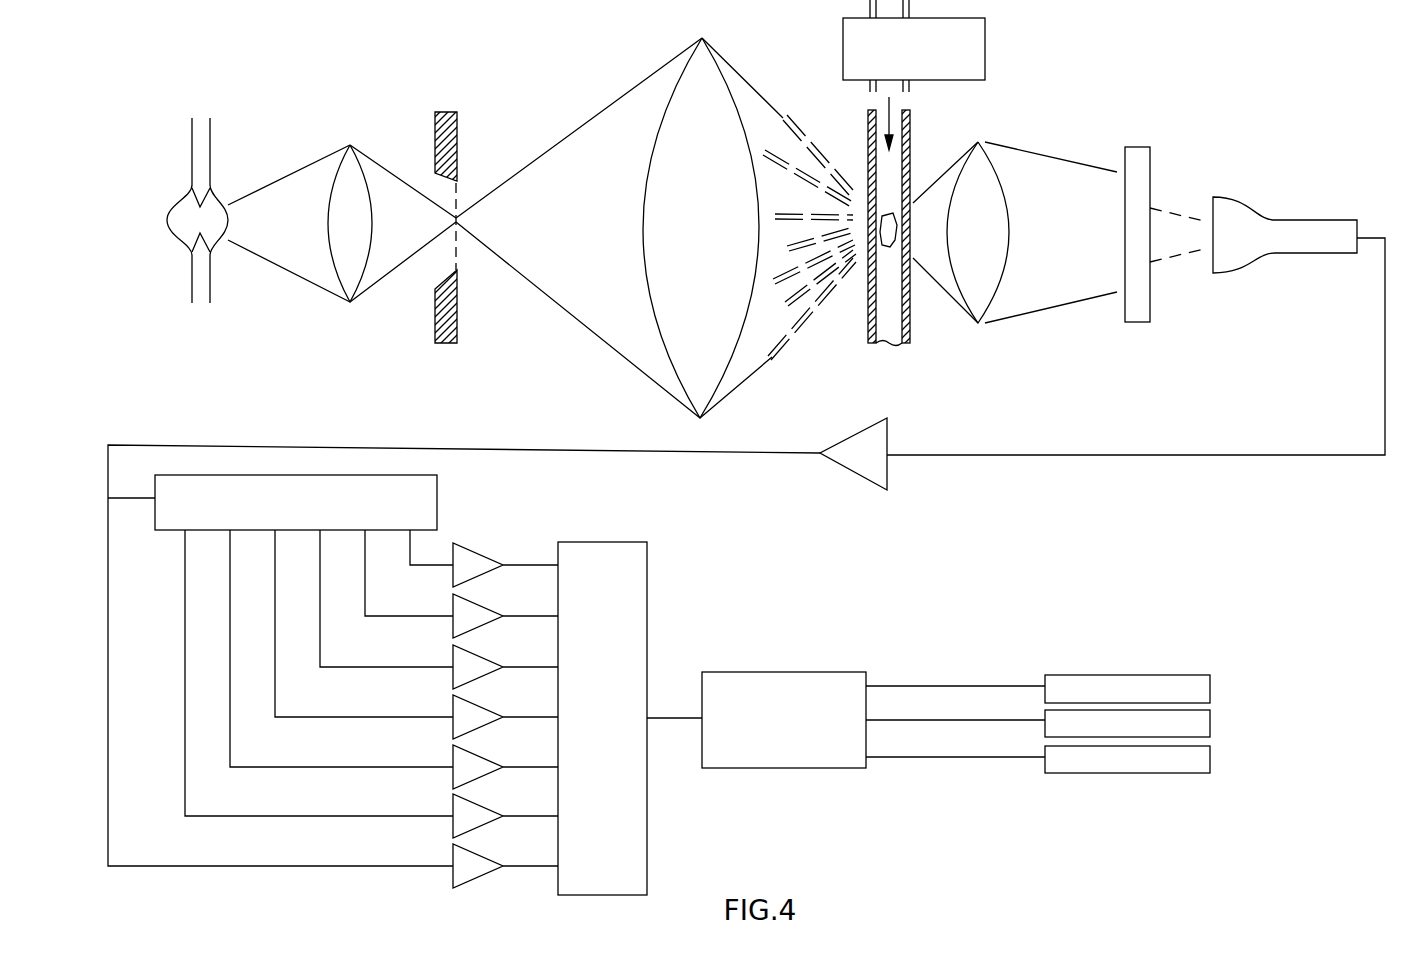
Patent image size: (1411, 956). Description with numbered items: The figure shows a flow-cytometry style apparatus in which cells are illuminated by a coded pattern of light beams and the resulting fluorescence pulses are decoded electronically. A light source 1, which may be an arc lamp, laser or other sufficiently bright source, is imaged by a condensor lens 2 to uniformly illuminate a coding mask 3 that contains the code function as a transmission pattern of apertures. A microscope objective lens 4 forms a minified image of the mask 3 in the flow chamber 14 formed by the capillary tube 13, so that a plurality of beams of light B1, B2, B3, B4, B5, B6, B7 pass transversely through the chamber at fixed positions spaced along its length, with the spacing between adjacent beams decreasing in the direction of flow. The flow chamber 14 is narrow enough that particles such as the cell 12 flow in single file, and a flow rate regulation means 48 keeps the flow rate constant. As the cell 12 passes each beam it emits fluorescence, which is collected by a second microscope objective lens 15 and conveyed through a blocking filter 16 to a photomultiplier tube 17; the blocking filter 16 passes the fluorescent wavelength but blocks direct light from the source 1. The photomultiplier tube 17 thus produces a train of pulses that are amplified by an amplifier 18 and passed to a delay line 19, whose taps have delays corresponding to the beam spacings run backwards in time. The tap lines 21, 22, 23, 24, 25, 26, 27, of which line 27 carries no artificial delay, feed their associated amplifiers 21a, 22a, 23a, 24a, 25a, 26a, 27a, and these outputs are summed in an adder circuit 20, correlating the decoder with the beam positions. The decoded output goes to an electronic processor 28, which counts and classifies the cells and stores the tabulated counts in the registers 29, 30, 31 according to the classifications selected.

The light source 1 is at (185, 195).
The condensor lens 2 is at (350, 223).
The coding mask 3 is at (458, 243).
The microscope objective lens 4 is at (701, 228).
The beam of light B1 is at (797, 128).
The beam of light B2 is at (790, 160).
The beam of light B3 is at (808, 213).
The beam of light B4 is at (812, 240).
The beam of light B5 is at (778, 280).
The beam of light B6 is at (795, 335).
The beam of light B7 is at (827, 308).
The cell 12 is at (893, 208).
The capillary tube 13 is at (910, 322).
The flow chamber 14 is at (879, 318).
The second microscope objective lens 15 is at (978, 232).
The blocking filter 16 is at (1150, 315).
The photomultiplier tube 17 is at (1285, 235).
The amplifier 18 is at (853, 454).
The delay line 19 is at (296, 502).
The adder circuit 20 is at (602, 718).
The delay line tap 21 is at (416, 547).
The delay line tap 22 is at (394, 573).
The delay line tap 23 is at (371, 598).
The delay line tap 24 is at (349, 623).
The delay line tap 25 is at (326, 648).
The delay line tap 26 is at (304, 673).
The delay line tap 27 is at (131, 487).
The amplifier 21a is at (505, 565).
The amplifier 22a is at (505, 616).
The amplifier 23a is at (505, 667).
The amplifier 24a is at (505, 717).
The amplifier 25a is at (505, 767).
The amplifier 26a is at (505, 816).
The amplifier 27a is at (505, 866).
The electronic processor 28 is at (784, 720).
The register 29 is at (1127, 689).
The register 30 is at (1127, 723).
The register 31 is at (1127, 759).
The flow rate regulation means 48 is at (988, 55).